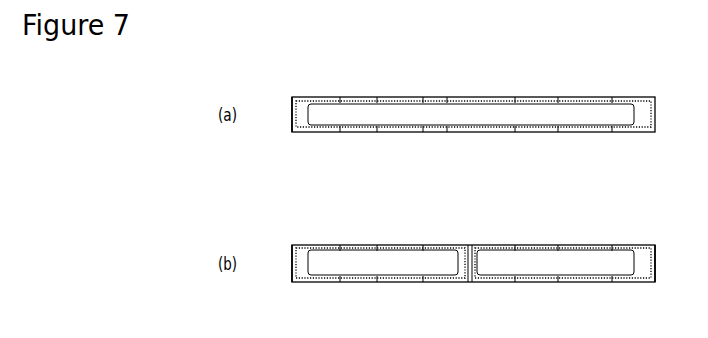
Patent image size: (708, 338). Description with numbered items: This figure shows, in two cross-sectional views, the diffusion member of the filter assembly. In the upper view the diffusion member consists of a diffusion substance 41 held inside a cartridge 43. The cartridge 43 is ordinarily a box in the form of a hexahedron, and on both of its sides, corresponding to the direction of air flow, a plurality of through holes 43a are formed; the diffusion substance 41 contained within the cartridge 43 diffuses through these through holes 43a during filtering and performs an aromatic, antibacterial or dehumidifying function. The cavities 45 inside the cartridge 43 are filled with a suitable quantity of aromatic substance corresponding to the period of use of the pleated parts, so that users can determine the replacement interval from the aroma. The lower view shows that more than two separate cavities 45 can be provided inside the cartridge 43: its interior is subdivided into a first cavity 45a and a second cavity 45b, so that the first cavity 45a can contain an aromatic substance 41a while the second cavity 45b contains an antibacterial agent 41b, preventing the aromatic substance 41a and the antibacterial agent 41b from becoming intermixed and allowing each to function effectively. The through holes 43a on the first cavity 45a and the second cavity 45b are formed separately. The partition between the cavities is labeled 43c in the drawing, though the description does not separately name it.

The diffusion substance 41 is at (572, 96).
The aromatic substance 41a is at (367, 281).
The antibacterial agent 41b is at (557, 269).
The cartridge 43 is at (315, 93).
The through holes 43a is at (337, 98).
The frame partition 43c is at (608, 284).
The cavities 45 is at (293, 133).
The first cavity 45a is at (293, 284).
The second cavity 45b is at (652, 284).